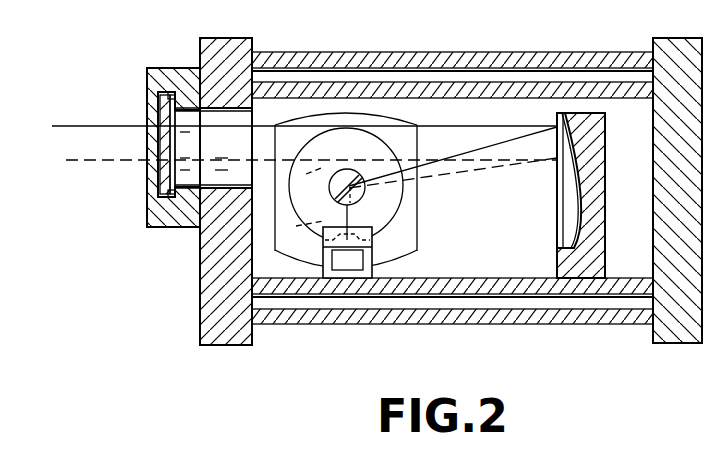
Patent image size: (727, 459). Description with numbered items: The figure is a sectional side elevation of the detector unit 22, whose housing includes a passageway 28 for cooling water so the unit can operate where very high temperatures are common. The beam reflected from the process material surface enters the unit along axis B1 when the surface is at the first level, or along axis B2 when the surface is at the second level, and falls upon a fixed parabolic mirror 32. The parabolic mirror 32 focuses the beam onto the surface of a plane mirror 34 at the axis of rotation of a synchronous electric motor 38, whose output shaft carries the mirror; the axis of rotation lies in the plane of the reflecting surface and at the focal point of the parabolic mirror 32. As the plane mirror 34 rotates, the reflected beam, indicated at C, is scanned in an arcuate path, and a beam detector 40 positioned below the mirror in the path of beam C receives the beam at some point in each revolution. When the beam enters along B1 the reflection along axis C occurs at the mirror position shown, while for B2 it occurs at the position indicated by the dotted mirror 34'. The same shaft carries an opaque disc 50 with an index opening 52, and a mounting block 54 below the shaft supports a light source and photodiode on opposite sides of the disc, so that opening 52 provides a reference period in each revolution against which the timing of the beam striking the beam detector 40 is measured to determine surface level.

The detector unit 22 is at (196, 318).
The passageway for cooling water 28 is at (275, 300).
The parabolic mirror 32 is at (133, 197).
The plane mirror 34 is at (347, 170).
The plane mirror in dotted line position 34' is at (346, 185).
The synchronous electric motor 38 is at (404, 146).
The beam detector 40 is at (383, 246).
The opaque disc 50 is at (295, 121).
The index opening 52 is at (303, 213).
The mounting block 54 is at (329, 279).
The reflected beam axis C is at (378, 210).
The reflected beam axis at first level B1 is at (78, 126).
The reflected beam axis at second level B2 is at (67, 161).